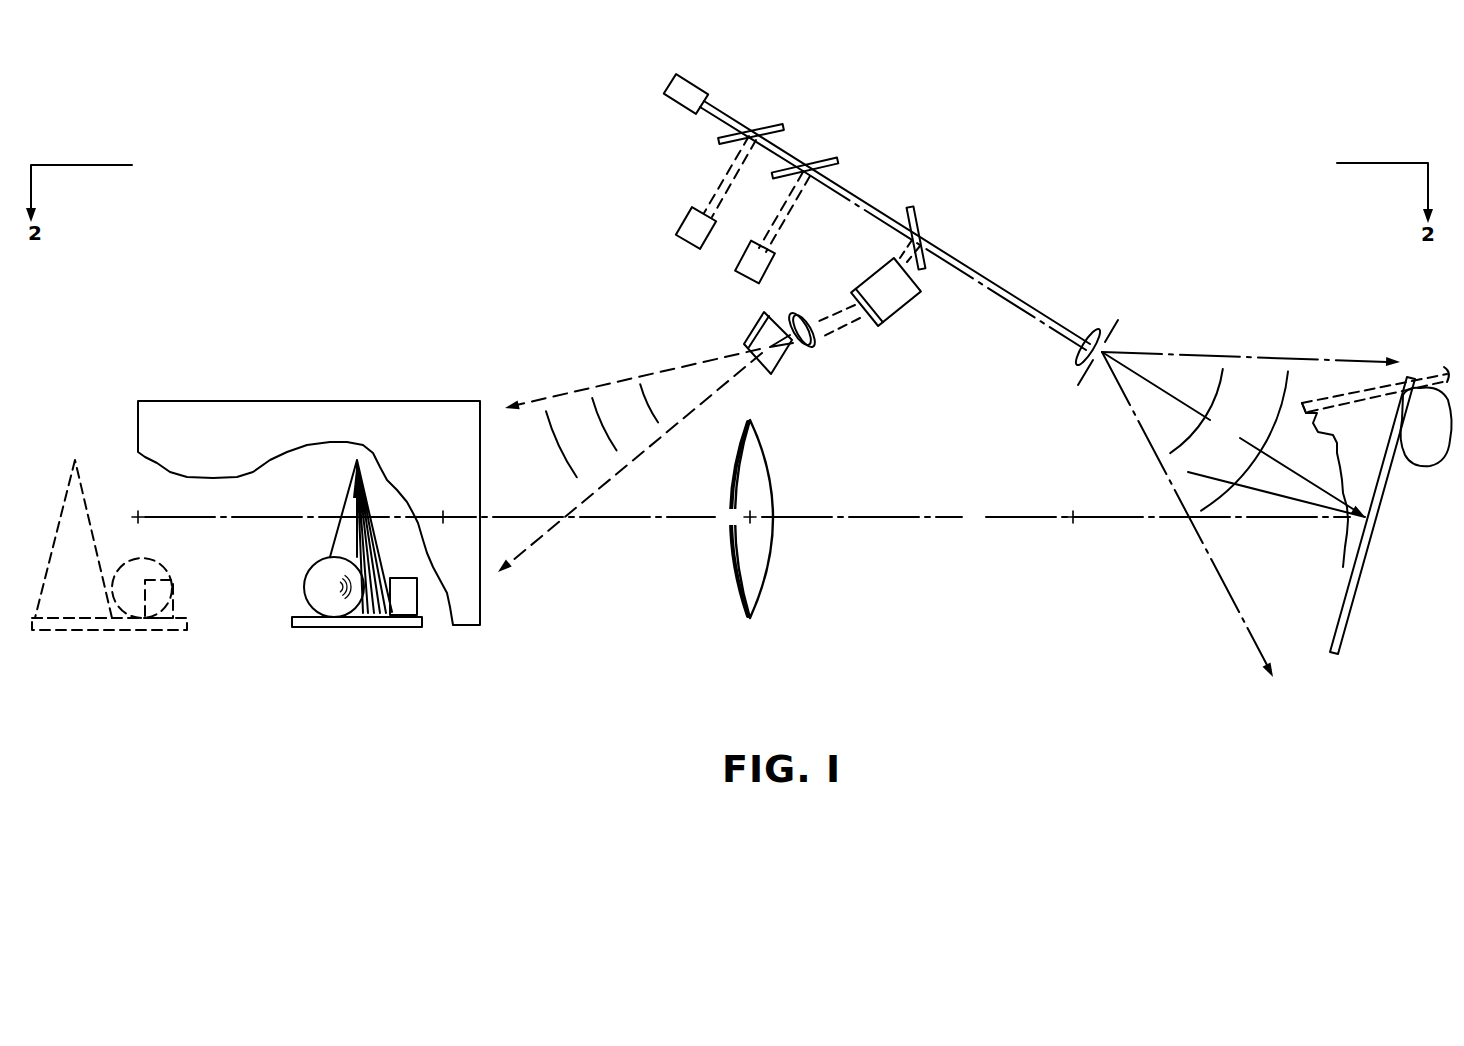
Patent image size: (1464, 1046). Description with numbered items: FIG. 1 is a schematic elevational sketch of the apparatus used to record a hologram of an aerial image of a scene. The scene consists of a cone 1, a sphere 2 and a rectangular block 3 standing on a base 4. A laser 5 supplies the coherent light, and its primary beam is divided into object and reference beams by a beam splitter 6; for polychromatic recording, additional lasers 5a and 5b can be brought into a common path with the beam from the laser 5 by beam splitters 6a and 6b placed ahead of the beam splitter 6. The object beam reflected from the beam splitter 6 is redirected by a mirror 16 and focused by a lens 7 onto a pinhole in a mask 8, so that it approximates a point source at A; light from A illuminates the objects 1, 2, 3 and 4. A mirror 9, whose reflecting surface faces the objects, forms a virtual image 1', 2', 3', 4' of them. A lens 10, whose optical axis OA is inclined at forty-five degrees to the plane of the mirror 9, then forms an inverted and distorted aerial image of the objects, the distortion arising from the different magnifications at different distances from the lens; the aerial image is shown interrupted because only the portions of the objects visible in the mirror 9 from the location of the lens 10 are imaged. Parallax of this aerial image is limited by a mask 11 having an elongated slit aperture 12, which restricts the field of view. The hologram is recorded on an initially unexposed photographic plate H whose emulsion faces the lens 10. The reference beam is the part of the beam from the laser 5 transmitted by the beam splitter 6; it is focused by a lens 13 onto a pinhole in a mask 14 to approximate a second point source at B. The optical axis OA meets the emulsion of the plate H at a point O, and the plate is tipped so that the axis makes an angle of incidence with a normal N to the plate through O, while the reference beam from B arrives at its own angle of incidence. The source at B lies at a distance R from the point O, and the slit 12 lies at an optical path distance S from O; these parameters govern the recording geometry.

The cone 1 is at (356, 534).
The sphere 2 is at (317, 587).
The rectangular block 3 is at (417, 600).
The base 4 is at (357, 636).
The laser 5 is at (698, 90).
The additional laser 5a is at (676, 222).
The additional laser 5b is at (762, 268).
The beam splitter 6 is at (923, 229).
The beam splitter 6a is at (768, 126).
The beam splitter 6b is at (824, 164).
The lens 7 is at (812, 340).
The mask 8 is at (778, 362).
The mirror 9 is at (432, 402).
The lens 10 is at (764, 482).
The mask 11 is at (729, 474).
The elongated slit aperture 12 is at (718, 529).
The lens 13 is at (1096, 330).
The mask 14 is at (1085, 372).
The mirror 16 is at (903, 297).
The virtual image of cone 1' is at (73, 537).
The virtual image of sphere 2' is at (149, 579).
The virtual image of block 3' is at (176, 599).
The virtual image of base 4' is at (109, 644).
The point source A is at (762, 342).
The point source B is at (1112, 347).
The photographic plate H is at (1343, 642).
The point O is at (1350, 521).
The distance R is at (1233, 434).
The normal N is at (1220, 480).
The optical path distance S is at (973, 516).
The optical axis OA is at (868, 515).